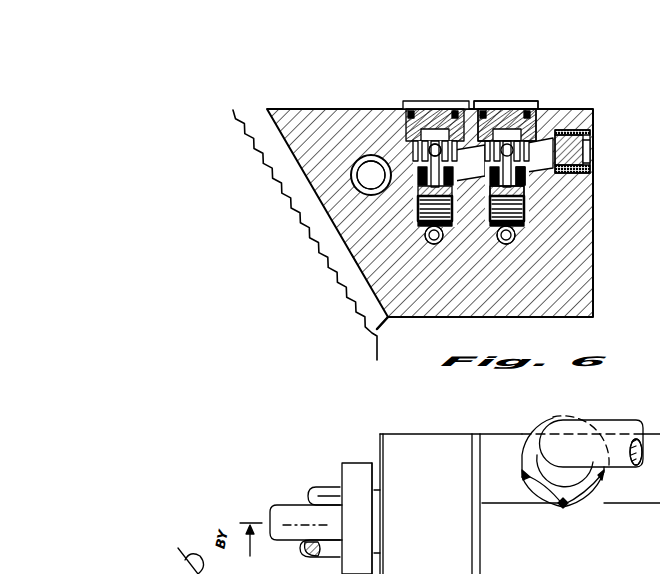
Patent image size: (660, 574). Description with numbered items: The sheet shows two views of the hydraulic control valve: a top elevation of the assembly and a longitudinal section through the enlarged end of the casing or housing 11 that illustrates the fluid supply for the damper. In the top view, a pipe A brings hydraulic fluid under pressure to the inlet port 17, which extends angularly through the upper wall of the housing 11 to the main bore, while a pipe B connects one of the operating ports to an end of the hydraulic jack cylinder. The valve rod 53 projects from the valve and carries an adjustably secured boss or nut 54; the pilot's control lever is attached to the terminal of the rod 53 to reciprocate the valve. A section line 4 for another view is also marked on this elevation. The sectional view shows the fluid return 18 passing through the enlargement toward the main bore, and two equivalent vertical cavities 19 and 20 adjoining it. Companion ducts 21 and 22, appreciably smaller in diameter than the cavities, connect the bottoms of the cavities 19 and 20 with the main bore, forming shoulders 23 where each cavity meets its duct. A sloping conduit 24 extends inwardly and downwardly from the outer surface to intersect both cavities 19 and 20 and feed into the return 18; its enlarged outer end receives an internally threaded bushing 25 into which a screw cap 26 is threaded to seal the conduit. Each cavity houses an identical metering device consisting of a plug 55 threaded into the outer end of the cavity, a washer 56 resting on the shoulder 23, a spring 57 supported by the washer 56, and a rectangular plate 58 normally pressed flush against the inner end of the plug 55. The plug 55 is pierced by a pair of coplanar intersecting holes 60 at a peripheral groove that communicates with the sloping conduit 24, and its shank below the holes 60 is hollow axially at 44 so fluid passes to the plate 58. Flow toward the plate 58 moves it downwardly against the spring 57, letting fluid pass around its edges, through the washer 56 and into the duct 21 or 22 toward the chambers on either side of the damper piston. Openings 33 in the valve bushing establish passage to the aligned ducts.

In FIG. 6, the casing or housing 11 is at (293, 222).
In FIG. 6, the fluid return passage 18 is at (371, 173).
In FIG. 6, the hollow axial passage of plug shank 44 is at (420, 178).
In FIG. 6, the coplanar intersecting holes 60 is at (425, 142).
In FIG. 6, the vertical cavity 19 is at (462, 130).
In FIG. 6, the plug 55 is at (532, 126).
In FIG. 6, the vertical cavity 20 is at (538, 118).
In FIG. 6, the sloping conduit 24 is at (553, 132).
In FIG. 6, the internally threaded bushing 25 is at (590, 130).
In FIG. 6, the screw cap or plug 26 is at (590, 143).
In FIG. 6, the rectangular plate 58 is at (506, 177).
In FIG. 6, the spring 57 is at (527, 207).
In FIG. 6, the washer 56 is at (526, 215).
In FIG. 6, the companion duct 22 is at (452, 238).
In FIG. 6, the openings 33 is at (606, 243).
In FIG. 6, the companion duct 21 is at (450, 242).
In FIG. 6, the shoulder 23 is at (372, 272).
In FIG. 2, the boss or nut 54 is at (352, 464).
In FIG. 2, the valve rod 53 is at (290, 508).
In FIG. 2, the pipe B is at (327, 493).
In FIG. 2, the section line 4 is at (251, 531).
In FIG. 2, the inlet port 17 is at (580, 486).
In FIG. 2, the pipe A is at (628, 466).